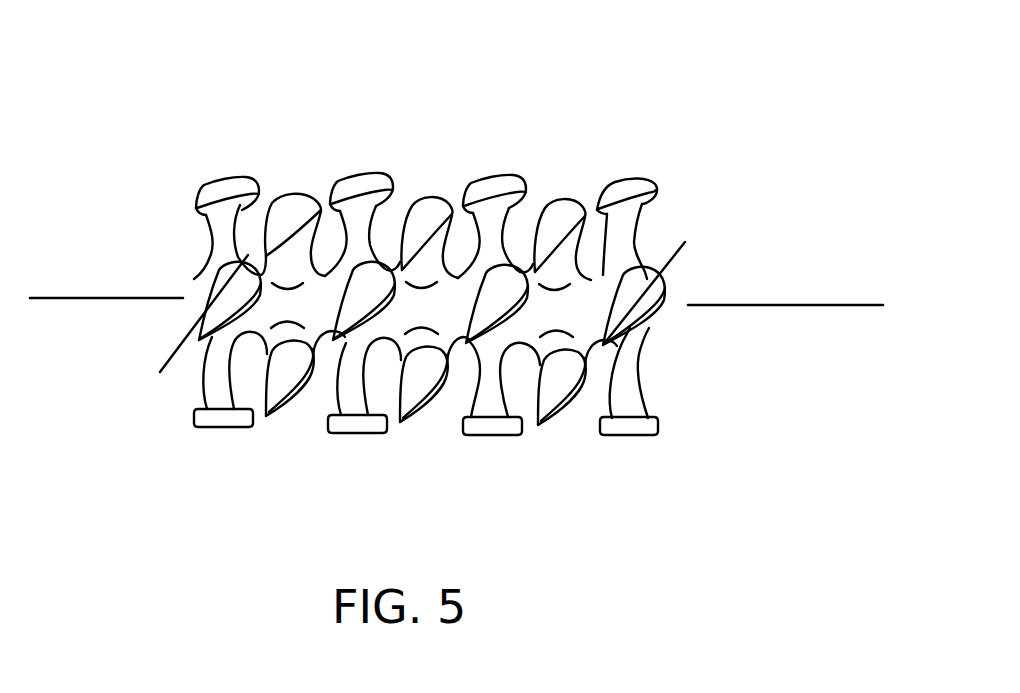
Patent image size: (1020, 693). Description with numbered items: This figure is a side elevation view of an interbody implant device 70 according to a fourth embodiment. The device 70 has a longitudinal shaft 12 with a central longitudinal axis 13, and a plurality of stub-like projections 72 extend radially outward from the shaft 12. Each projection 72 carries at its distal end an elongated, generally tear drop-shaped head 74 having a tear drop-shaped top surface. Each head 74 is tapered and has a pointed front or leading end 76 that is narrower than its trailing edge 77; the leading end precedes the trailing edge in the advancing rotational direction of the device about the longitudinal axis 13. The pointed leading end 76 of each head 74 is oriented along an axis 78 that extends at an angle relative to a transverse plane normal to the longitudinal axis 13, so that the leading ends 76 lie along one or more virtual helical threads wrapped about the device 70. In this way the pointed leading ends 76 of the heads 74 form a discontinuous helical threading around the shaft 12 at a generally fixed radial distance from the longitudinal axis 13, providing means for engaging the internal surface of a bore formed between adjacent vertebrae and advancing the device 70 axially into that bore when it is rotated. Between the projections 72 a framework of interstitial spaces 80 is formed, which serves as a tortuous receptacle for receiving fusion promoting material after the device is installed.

The longitudinal shaft 12 is at (217, 340).
The longitudinal axis 13 is at (798, 306).
The implant device 70 is at (683, 168).
The stub-like projections 72 is at (212, 240).
The tear drop-shaped head 74 is at (262, 189).
The pointed leading end 76 is at (330, 197).
The trailing edge 77 is at (636, 184).
The axis 78 is at (167, 352).
The interstitial spaces 80 is at (513, 262).